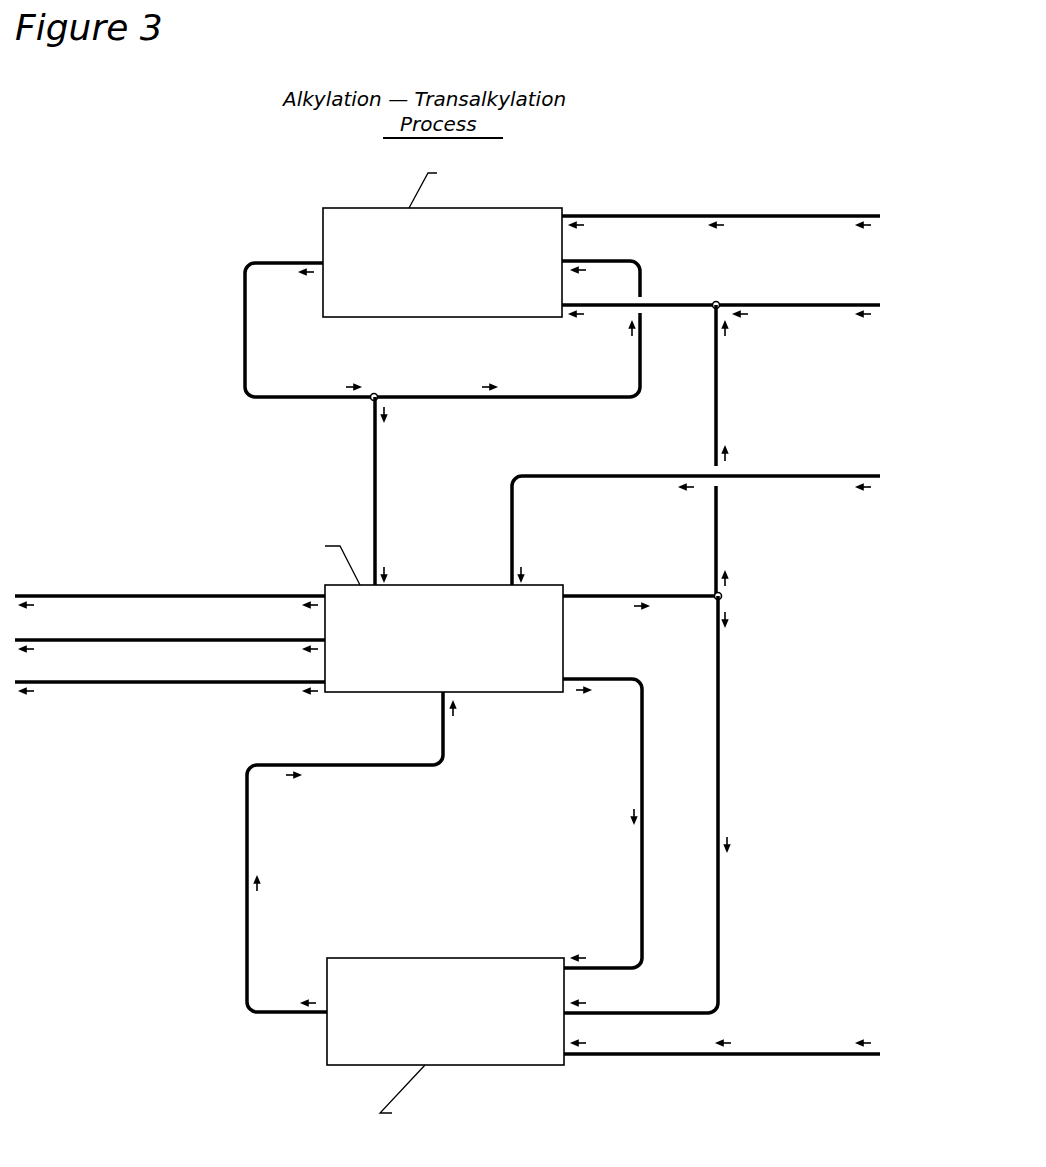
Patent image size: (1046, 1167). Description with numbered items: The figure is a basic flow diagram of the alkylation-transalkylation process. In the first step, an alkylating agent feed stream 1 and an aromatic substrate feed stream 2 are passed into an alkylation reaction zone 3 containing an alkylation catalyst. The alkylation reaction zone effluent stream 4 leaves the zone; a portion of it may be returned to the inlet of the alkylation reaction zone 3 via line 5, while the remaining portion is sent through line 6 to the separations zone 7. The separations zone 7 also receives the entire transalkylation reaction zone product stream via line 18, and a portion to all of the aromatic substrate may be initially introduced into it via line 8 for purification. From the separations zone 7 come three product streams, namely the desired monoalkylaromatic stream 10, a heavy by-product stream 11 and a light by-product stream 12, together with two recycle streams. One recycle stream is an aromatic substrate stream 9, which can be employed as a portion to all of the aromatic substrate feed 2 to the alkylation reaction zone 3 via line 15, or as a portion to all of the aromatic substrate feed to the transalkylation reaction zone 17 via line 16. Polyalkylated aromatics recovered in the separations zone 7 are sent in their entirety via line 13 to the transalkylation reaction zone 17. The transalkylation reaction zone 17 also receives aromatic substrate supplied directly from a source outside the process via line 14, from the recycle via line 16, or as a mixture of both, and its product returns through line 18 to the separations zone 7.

The alkylating agent feed stream 1 is at (700, 216).
The aromatic substrate feed stream 2 is at (760, 304).
The alkylation reaction zone 3 is at (425, 317).
The alkylation reaction zone effluent stream 4 is at (290, 262).
The recycle line to alkylation reaction zone inlet 5 is at (585, 261).
The line to separations zone 6 is at (375, 500).
The separations zone 7 is at (540, 585).
The aromatic substrate line to separations zone 8 is at (865, 476).
The aromatic substrate stream 9 is at (608, 596).
The monoalkylaromatic stream 10 is at (115, 596).
The heavy by-product stream 11 is at (113, 640).
The light by-product stream 12 is at (113, 682).
The polyalkylated aromatics recycle line 13 is at (585, 679).
The outside aromatic substrate supply line 14 is at (672, 1055).
The aromatic substrate recycle line to alkylation zone 15 is at (716, 367).
The aromatic substrate recycle line to transalkylation zone 16 is at (722, 672).
The transalkylation reaction zone 17 is at (457, 958).
The transalkylation reaction zone product line 18 is at (440, 728).